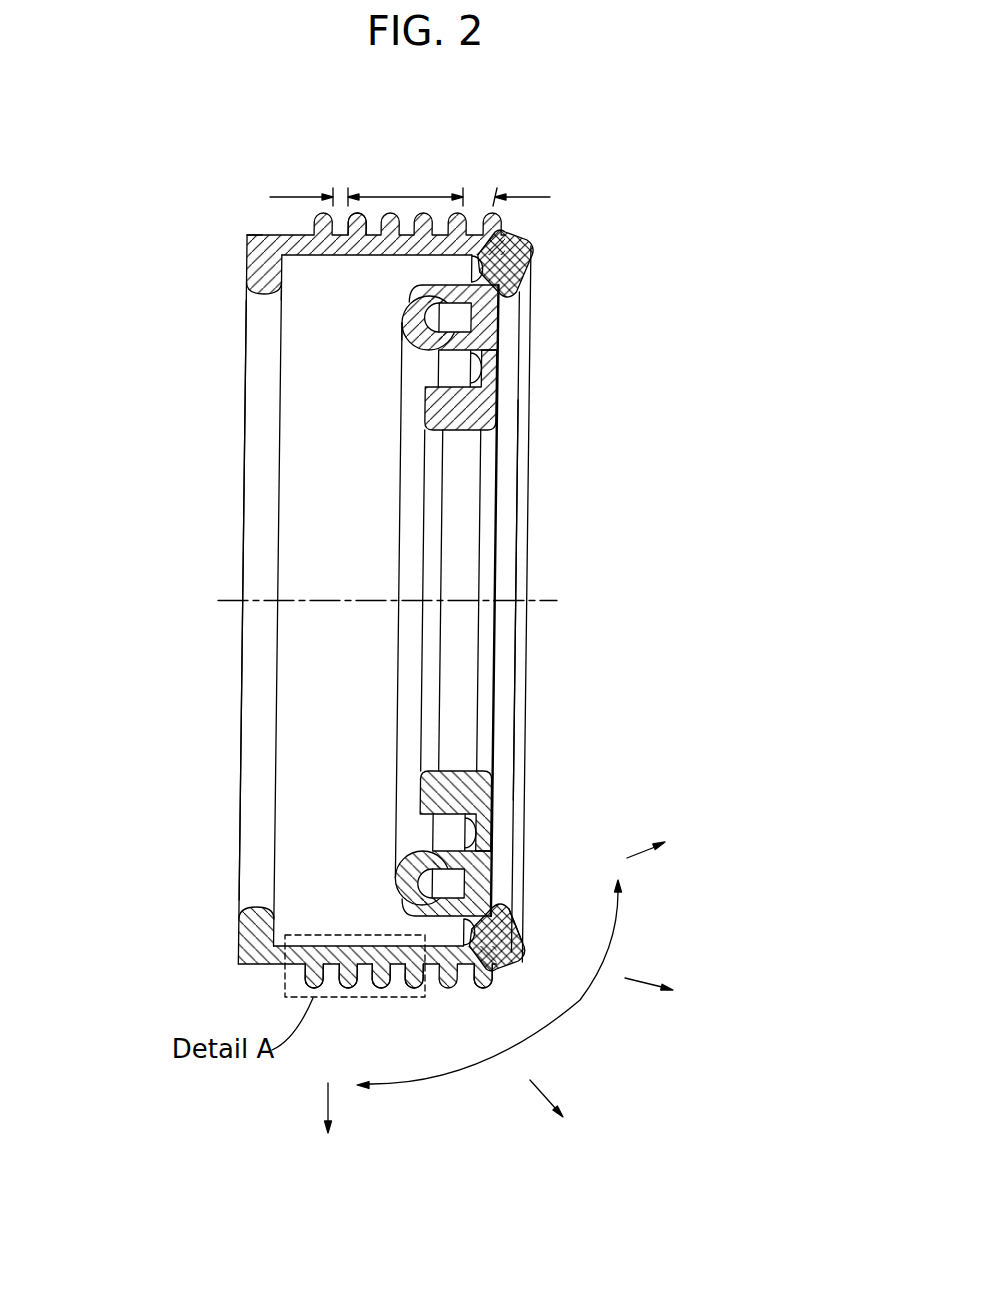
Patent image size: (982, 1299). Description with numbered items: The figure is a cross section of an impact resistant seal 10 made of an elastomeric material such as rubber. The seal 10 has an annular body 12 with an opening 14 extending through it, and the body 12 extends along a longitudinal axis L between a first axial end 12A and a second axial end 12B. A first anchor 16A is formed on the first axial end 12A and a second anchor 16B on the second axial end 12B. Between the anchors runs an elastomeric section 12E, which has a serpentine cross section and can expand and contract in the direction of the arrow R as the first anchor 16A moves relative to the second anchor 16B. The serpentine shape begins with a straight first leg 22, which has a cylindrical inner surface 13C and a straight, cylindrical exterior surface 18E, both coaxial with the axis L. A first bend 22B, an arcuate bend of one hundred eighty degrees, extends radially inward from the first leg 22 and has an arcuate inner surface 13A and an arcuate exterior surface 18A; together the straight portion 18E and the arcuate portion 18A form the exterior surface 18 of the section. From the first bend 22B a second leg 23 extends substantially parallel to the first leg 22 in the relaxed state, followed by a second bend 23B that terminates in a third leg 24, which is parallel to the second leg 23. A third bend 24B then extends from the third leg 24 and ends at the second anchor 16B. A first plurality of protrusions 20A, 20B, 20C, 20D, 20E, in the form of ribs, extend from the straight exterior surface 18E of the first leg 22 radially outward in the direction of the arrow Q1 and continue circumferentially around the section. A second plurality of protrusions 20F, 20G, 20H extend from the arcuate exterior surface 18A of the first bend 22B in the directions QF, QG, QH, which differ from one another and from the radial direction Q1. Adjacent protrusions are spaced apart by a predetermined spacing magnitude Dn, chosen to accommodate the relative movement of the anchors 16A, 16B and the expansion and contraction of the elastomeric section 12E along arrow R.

The impact resistant seal 10 is at (577, 83).
The annular body 12 is at (247, 352).
The first axial end 12A is at (222, 260).
The second axial end 12B is at (468, 448).
The elastomeric section 12E is at (300, 165).
The arcuate inner surface 13A is at (298, 292).
The cylindrical inner surface 13C is at (273, 235).
The opening 14 is at (322, 548).
The first anchor 16A is at (248, 278).
The second anchor 16B is at (490, 773).
The exterior surface 18 is at (297, 243).
The arcuate exterior surface 18A is at (403, 320).
The straight exterior surface 18E is at (340, 236).
The protrusion 20A is at (302, 983).
The protrusion 20B is at (343, 987).
The protrusion 20C is at (378, 985).
The protrusion 20D is at (410, 985).
The protrusion 20E is at (447, 953).
The protrusion 20F is at (495, 988).
The protrusion 20G is at (520, 950).
The protrusion 20H is at (505, 912).
The first leg 22 is at (380, 256).
The first bend 22B is at (470, 268).
The second leg 23 is at (477, 286).
The second bend 23B is at (410, 318).
The third leg 24 is at (430, 348).
The third bend 24B is at (487, 368).
The longitudinal axis L is at (547, 601).
The predetermined spacing magnitude Dn is at (373, 187).
The arrow R is at (550, 1035).
The arrow Q1 is at (330, 1110).
The arrow QF is at (532, 1092).
The arrow QG is at (640, 977).
The arrow QH is at (637, 850).